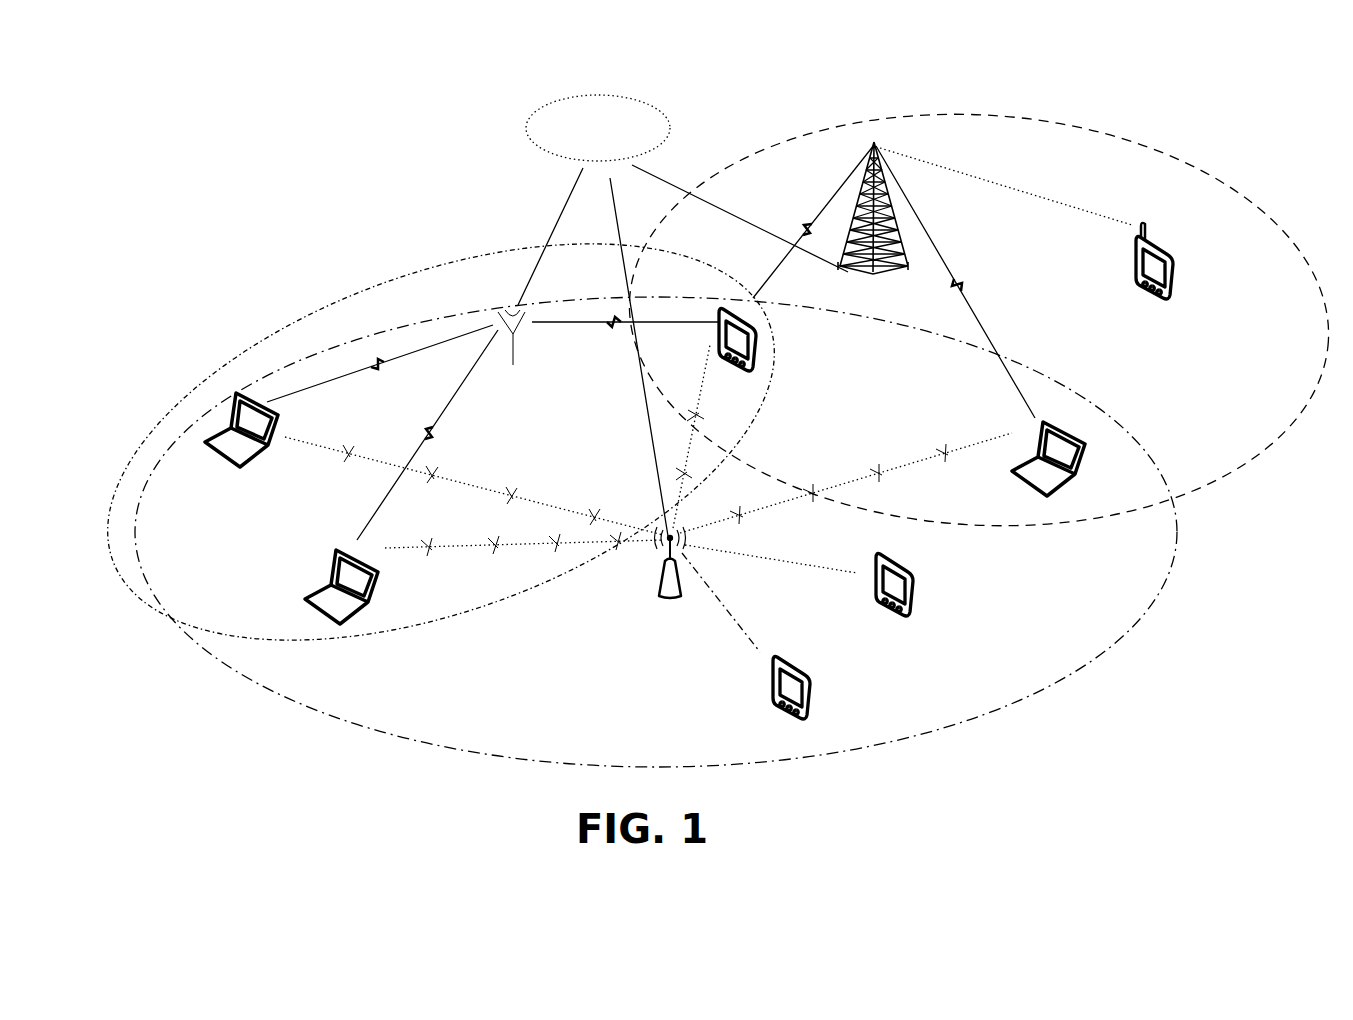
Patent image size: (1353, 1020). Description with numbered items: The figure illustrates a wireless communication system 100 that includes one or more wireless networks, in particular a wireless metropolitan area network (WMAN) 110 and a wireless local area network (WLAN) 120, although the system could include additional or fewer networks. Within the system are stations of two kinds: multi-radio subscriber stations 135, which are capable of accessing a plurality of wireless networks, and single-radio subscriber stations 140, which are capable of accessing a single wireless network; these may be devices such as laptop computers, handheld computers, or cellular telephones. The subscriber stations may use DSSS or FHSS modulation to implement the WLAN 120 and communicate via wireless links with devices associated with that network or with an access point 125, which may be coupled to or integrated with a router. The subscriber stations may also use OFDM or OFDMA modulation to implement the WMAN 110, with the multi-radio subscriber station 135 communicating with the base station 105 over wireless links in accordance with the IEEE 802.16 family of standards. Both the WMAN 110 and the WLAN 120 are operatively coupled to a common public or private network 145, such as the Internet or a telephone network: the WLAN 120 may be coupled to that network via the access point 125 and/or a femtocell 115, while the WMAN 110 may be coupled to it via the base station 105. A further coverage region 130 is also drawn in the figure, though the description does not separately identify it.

The wireless communication system 100 is at (359, 133).
The base station 105 is at (879, 225).
The wireless metropolitan area network (WMAN) 110 is at (1118, 132).
The femtocell 115 is at (513, 351).
The wireless local area network (WLAN) 120 is at (1100, 652).
The access point 125 is at (672, 579).
The access point coverage area 130 is at (377, 287).
The multi-radio subscriber station 135 is at (645, 467).
The single-radio subscriber station 140 is at (999, 491).
The common public or private network 145 is at (578, 140).